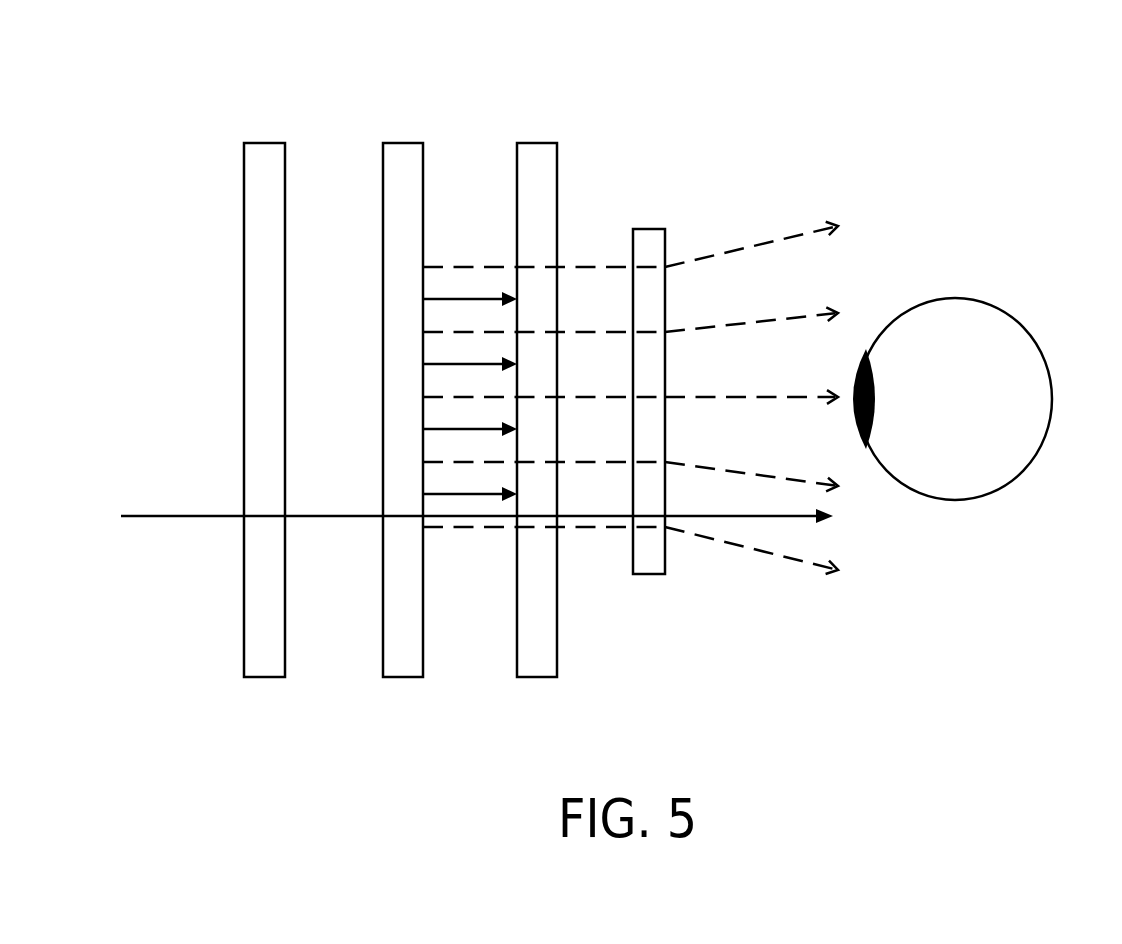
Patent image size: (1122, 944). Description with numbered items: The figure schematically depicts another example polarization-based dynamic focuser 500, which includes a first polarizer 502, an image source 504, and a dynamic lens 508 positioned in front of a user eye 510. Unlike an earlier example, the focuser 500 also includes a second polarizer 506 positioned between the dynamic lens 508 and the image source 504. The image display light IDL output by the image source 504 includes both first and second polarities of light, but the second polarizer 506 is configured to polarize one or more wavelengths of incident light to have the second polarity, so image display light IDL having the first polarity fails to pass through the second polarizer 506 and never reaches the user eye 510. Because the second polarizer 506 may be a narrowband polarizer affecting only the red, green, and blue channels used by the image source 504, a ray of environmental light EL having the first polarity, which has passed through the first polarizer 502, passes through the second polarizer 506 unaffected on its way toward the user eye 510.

The polarization-based dynamic focuser 500 is at (221, 87).
The first polarizer 502 is at (244, 183).
The image source 504 is at (382, 183).
The second polarizer 506 is at (517, 183).
The dynamic lens 508 is at (666, 252).
The user eye 510 is at (995, 304).
The image display light IDL is at (497, 265).
The environmental light EL is at (170, 518).